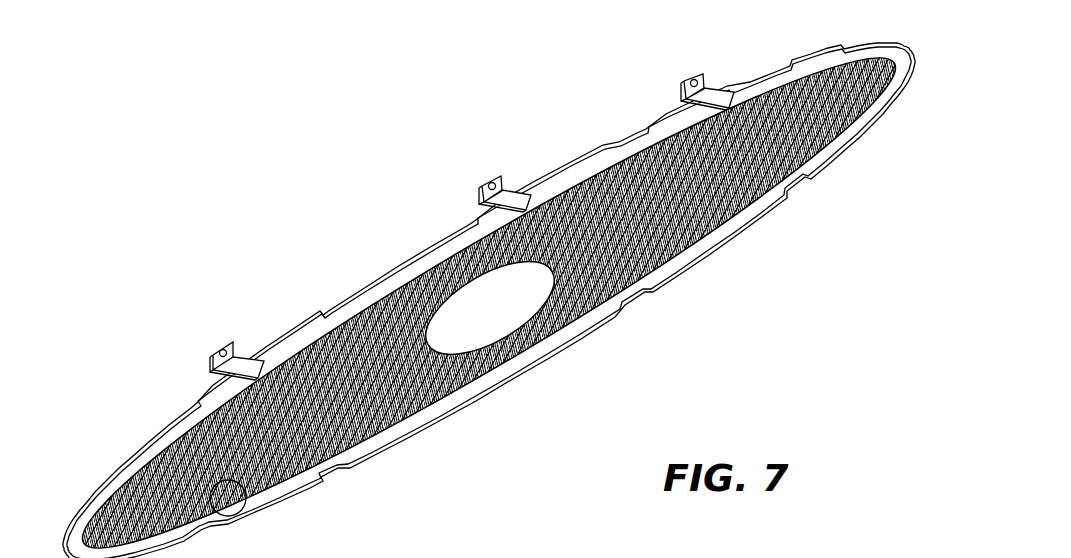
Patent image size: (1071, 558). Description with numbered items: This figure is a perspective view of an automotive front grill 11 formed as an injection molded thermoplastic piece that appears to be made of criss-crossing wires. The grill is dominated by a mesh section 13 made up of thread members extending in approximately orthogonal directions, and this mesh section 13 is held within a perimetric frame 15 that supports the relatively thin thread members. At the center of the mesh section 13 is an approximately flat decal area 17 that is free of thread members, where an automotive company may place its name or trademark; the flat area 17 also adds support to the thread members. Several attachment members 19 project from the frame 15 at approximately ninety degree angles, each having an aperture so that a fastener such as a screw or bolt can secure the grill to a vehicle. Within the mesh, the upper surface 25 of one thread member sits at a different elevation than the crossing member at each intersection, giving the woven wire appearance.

The automotive front grill 11 is at (190, 243).
The mesh section 13 is at (672, 248).
The perimetric frame 15 is at (570, 156).
The decal area 17 is at (467, 300).
The attachment member 19 is at (233, 356).
The upper surface of thread member 25 is at (237, 512).